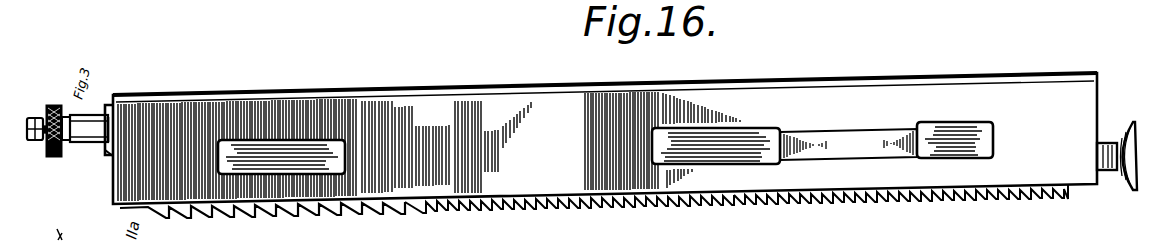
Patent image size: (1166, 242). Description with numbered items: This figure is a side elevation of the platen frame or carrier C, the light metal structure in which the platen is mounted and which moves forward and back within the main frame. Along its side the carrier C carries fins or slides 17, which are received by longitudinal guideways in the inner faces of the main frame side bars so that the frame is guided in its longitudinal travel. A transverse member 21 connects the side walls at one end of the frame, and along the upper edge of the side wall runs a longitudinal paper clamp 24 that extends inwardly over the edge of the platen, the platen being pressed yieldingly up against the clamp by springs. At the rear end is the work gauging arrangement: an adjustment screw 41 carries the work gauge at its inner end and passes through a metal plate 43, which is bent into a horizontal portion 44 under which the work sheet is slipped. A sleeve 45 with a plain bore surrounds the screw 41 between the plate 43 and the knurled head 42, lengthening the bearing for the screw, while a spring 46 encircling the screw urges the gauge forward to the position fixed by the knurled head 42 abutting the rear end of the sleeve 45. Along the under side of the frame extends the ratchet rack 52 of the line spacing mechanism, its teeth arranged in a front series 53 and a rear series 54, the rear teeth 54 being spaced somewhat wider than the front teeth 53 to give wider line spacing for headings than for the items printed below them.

The fins or slides 17 is at (952, 115).
The transverse member 21 is at (1106, 142).
The longitudinal paper clamps 24 is at (858, 81).
The adjustment screw 41 is at (37, 141).
The knurled head 42 is at (50, 105).
The metal plate 43 is at (117, 194).
The horizontal portion of the plate 44 is at (114, 99).
The sleeve 45 is at (77, 118).
The spring 46 is at (106, 150).
The ratchet rack 52 is at (537, 198).
The front series of teeth 53 is at (953, 197).
The rear series of teeth 54 is at (362, 218).
The platen frame or carrier C is at (1122, 135).